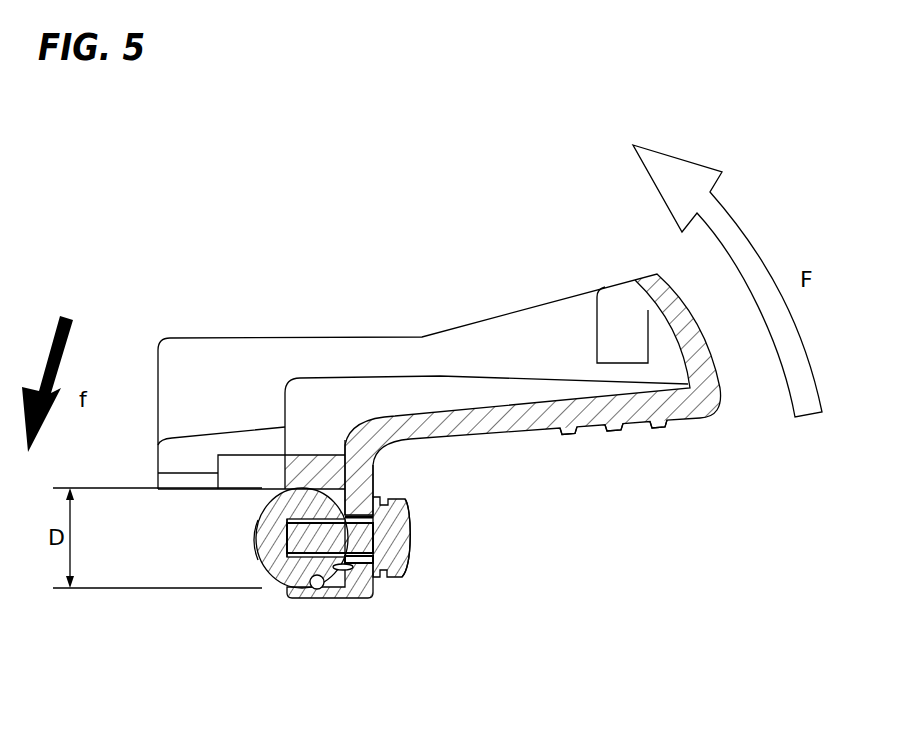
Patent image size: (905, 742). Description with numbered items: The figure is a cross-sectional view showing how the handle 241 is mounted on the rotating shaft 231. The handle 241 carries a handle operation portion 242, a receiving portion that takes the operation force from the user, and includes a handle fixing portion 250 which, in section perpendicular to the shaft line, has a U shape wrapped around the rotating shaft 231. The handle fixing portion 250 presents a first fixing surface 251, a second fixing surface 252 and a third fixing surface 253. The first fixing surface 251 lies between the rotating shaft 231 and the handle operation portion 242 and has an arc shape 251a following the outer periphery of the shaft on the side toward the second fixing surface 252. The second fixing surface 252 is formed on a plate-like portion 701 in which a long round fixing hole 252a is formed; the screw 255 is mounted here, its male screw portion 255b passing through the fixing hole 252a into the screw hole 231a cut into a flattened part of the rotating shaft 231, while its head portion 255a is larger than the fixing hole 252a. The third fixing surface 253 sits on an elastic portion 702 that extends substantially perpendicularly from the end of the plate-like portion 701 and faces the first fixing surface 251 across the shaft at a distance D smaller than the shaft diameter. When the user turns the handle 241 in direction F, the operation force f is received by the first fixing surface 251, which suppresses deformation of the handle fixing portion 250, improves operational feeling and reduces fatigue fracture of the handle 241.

The handle 241 is at (578, 338).
The handle operation portion 242 is at (633, 427).
The handle fixing portion 250 is at (402, 576).
The first fixing surface 251 is at (287, 523).
The arc shape 251a is at (287, 530).
The second fixing surface 252 is at (378, 566).
The fixing hole 252a is at (362, 515).
The third fixing surface 253 is at (330, 592).
The screw 255 is at (410, 505).
The head portion 255a is at (410, 540).
The male screw portion 255b is at (307, 553).
The rotating shaft 231 is at (288, 570).
The screw hole 231a is at (267, 552).
The plate-like portion 701 is at (357, 597).
The elastic portion 702 is at (314, 590).